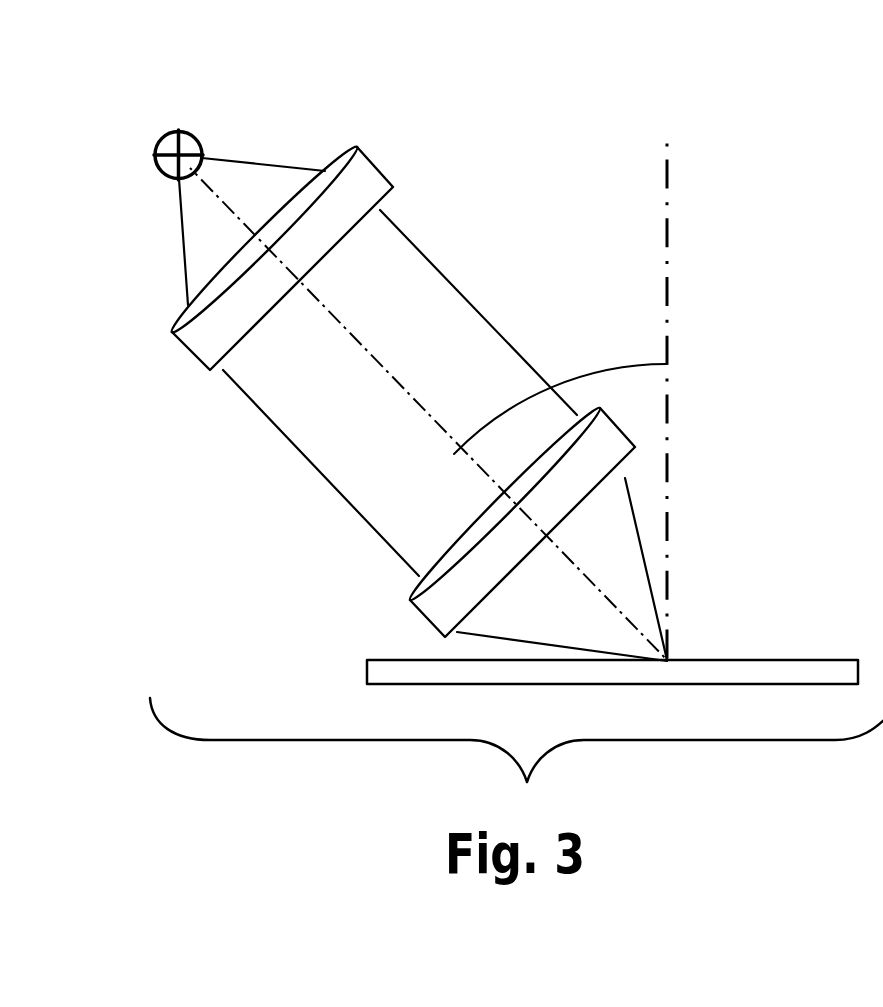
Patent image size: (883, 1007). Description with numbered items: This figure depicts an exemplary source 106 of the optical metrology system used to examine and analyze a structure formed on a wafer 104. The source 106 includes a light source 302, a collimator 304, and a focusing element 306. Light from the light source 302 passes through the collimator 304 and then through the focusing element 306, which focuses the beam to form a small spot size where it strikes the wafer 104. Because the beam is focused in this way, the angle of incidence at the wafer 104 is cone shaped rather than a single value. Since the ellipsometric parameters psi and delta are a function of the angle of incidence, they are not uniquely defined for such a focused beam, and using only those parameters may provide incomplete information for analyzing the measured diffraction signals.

The source 106 is at (548, 130).
The light source 302 is at (205, 135).
The collimator 304 is at (357, 152).
The focusing element 306 is at (422, 617).
The wafer 104 is at (780, 659).